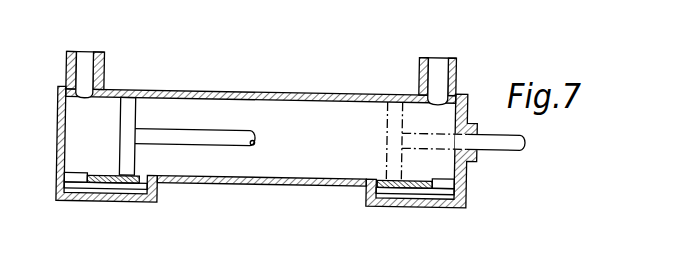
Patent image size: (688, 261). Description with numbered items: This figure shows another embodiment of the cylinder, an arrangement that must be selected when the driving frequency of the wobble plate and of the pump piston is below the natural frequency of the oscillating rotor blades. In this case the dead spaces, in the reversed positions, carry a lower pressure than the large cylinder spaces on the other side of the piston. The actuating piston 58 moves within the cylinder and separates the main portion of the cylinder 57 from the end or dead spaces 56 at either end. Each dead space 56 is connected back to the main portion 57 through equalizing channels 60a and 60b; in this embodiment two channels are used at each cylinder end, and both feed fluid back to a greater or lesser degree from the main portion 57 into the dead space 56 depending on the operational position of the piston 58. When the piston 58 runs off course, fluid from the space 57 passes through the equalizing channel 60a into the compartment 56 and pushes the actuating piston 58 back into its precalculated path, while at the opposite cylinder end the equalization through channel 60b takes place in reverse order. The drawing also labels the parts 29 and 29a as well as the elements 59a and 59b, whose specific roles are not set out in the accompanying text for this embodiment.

The cylinder tube 29 is at (300, 91).
The connecting fittings of the cylinder tube 29a is at (85, 65).
The dead space 56 is at (93, 152).
The main portion of the cylinder 57 is at (222, 122).
The actuating piston 58 is at (126, 115).
The seal rings (left) 59a is at (122, 184).
The seal rings (right) 59b is at (418, 187).
The equalizing channel 60a is at (132, 190).
The equalizing channel 60b is at (443, 195).